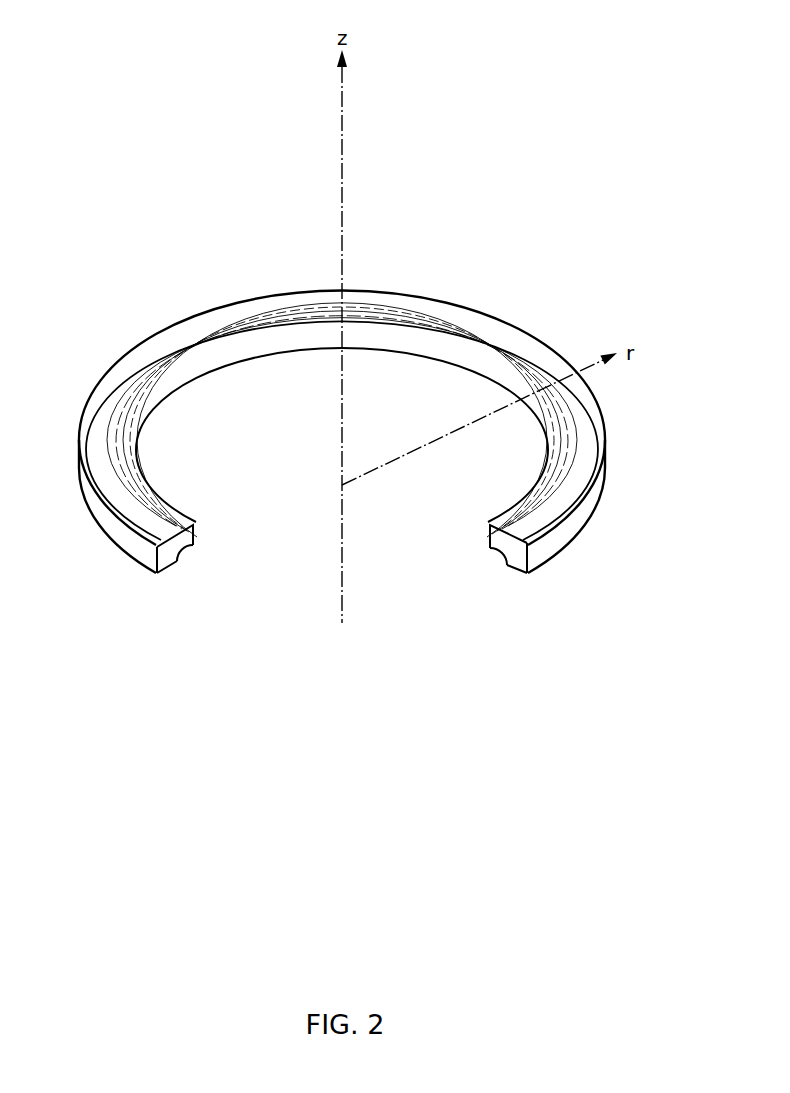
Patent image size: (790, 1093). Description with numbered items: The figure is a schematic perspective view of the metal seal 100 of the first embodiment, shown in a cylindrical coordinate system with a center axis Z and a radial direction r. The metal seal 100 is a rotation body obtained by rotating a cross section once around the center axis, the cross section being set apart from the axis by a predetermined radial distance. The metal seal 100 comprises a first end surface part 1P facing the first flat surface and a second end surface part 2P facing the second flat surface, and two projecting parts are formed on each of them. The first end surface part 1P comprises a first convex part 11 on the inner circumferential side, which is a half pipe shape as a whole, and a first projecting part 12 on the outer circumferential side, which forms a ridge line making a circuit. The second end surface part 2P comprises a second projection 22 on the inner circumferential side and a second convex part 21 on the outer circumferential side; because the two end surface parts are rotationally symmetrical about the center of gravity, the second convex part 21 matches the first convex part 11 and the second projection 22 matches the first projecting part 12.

The metal seal 100 is at (553, 262).
The first end surface part 1P is at (208, 292).
The second end surface part 2P is at (230, 390).
The first convex part 11 is at (189, 524).
The first projecting part 12 is at (157, 548).
The second convex part 21 is at (167, 568).
The second projection 22 is at (183, 560).